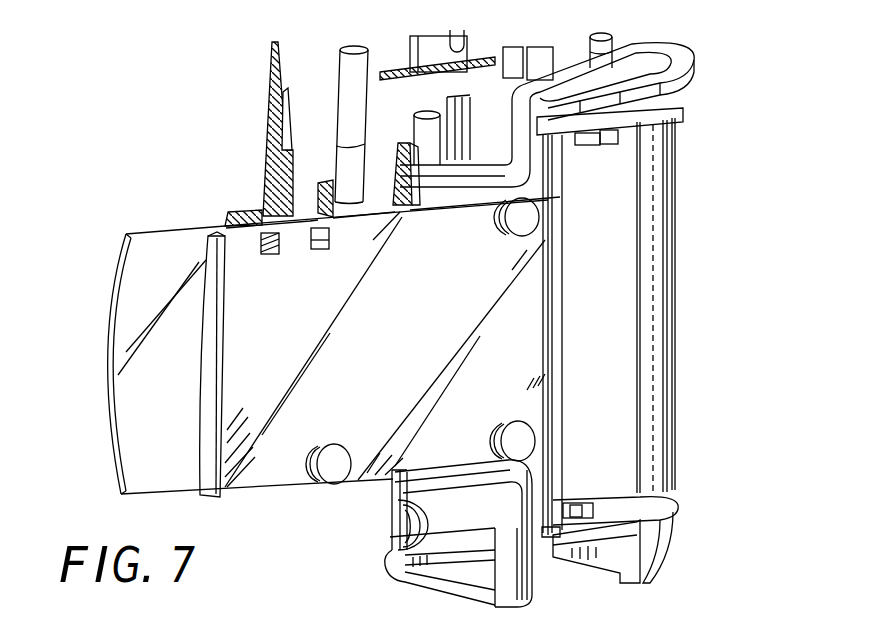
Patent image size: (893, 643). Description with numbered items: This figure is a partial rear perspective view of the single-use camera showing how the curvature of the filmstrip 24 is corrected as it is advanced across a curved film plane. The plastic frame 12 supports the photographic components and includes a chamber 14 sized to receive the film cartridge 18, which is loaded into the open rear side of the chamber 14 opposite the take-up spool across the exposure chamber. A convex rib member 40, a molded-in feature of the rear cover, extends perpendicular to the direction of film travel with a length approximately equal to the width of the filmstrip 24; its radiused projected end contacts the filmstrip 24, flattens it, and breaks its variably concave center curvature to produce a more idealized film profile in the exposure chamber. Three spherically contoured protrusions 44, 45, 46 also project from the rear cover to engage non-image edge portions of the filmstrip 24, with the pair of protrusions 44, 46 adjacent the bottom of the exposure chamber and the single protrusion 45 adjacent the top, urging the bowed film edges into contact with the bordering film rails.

The plastic frame 12 is at (271, 158).
The chamber 14 is at (552, 558).
The film cartridge 18 is at (658, 385).
The filmstrip 24 is at (107, 336).
The rib member 40 is at (212, 285).
The spherical protrusion 44 is at (333, 460).
The spherical protrusion 45 is at (520, 238).
The spherical protrusion 46 is at (518, 440).